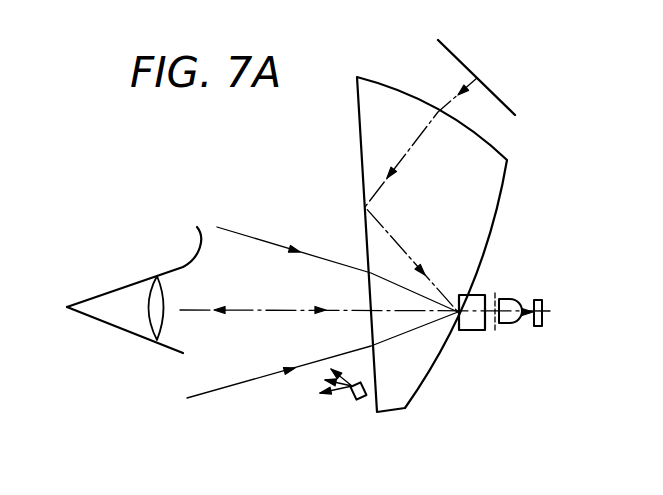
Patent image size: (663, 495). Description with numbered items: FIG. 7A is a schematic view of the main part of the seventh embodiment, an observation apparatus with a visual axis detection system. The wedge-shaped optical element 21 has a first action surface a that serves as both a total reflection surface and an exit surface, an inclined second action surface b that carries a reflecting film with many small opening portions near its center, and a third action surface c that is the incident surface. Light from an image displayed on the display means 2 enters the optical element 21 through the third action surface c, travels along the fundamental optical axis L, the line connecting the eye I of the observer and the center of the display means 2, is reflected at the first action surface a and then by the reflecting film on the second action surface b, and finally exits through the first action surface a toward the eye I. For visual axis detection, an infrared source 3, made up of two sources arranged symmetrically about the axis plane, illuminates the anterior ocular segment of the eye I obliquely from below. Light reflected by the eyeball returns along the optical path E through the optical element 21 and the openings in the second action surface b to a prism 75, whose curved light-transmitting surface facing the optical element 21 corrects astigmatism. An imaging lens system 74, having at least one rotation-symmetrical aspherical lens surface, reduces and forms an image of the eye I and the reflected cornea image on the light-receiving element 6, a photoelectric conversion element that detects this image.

The optical element 21 is at (373, 91).
The display means 2 is at (502, 101).
The infrared source 3 is at (352, 402).
The imaging lens system 74 is at (508, 298).
The prism 75 is at (473, 332).
The light-receiving element 6 is at (543, 308).
The first action surface a is at (361, 170).
The second action surface b is at (443, 345).
The third action surface c is at (418, 97).
The fundamental optical axis L is at (418, 138).
The optical path E is at (275, 243).
The eye I is at (140, 338).